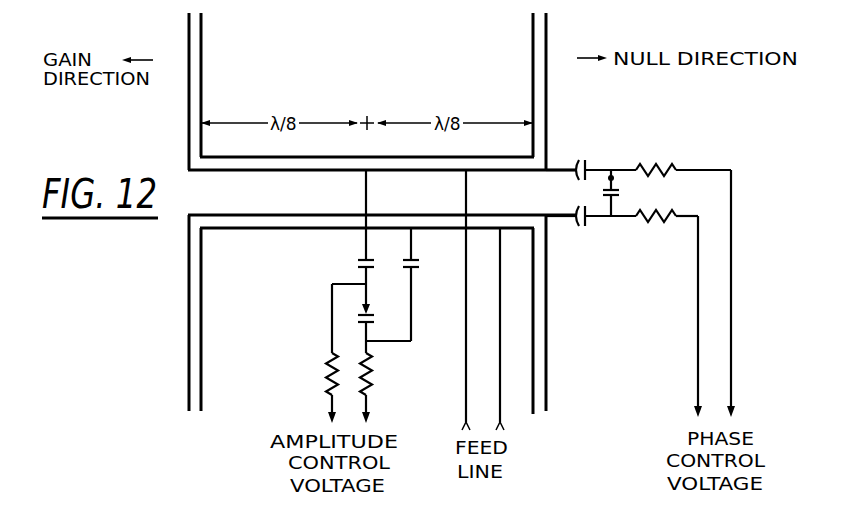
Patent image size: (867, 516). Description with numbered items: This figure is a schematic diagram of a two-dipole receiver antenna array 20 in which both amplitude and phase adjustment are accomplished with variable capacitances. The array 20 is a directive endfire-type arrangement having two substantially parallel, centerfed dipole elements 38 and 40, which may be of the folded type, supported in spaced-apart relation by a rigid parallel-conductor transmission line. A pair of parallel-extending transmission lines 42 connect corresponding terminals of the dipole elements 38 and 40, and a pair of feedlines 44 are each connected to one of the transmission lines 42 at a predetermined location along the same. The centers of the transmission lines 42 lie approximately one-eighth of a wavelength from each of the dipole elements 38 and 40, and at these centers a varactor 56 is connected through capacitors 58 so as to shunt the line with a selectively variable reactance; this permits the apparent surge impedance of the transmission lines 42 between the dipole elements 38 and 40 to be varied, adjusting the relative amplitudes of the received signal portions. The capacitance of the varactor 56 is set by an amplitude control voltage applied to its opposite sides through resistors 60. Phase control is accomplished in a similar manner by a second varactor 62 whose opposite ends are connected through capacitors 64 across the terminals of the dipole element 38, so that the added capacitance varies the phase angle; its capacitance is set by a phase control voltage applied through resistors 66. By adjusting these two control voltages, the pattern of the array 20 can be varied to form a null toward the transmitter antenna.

The receiver antenna array 20 is at (156, 277).
The dipole element 38 is at (522, 70).
The dipole element 40 is at (243, 50).
The transmission lines 42 is at (415, 161).
The feedlines 44 is at (500, 378).
The varactor 56 is at (370, 312).
The capacitors 58 is at (369, 258).
The resistors 60 is at (364, 366).
The second varactor 62 is at (615, 178).
The capacitors 64 is at (578, 173).
The resistors 66 is at (666, 160).